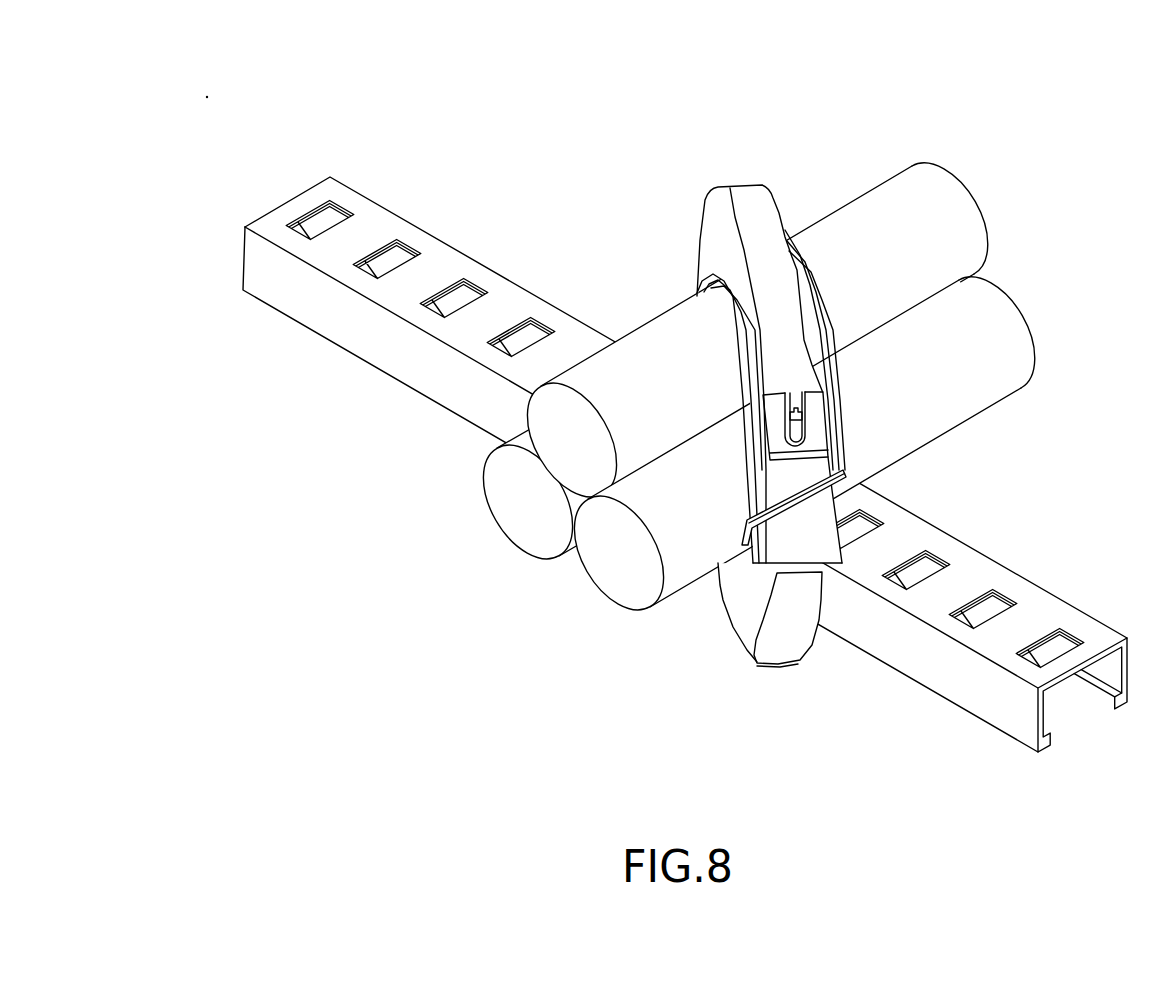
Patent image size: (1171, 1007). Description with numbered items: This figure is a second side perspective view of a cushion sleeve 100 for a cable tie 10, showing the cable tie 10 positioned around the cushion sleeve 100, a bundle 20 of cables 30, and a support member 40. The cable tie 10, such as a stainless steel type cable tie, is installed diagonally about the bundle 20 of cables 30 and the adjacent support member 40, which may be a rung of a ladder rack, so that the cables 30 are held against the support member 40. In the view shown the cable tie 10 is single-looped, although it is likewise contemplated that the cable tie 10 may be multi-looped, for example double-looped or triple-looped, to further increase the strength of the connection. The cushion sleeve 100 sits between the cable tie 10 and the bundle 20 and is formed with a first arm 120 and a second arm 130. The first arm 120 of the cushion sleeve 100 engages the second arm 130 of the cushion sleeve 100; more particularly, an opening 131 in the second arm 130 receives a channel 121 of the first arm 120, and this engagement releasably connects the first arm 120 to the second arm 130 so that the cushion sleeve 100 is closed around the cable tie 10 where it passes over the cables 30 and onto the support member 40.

The cable tie 10 is at (758, 213).
The bundle 20 is at (796, 385).
The cables 30 is at (890, 212).
The support member 40 is at (286, 201).
The cushion sleeve 100 is at (934, 481).
The first arm 120 is at (737, 277).
The channel 121 is at (760, 590).
The second arm 130 is at (740, 562).
The opening 131 is at (795, 515).